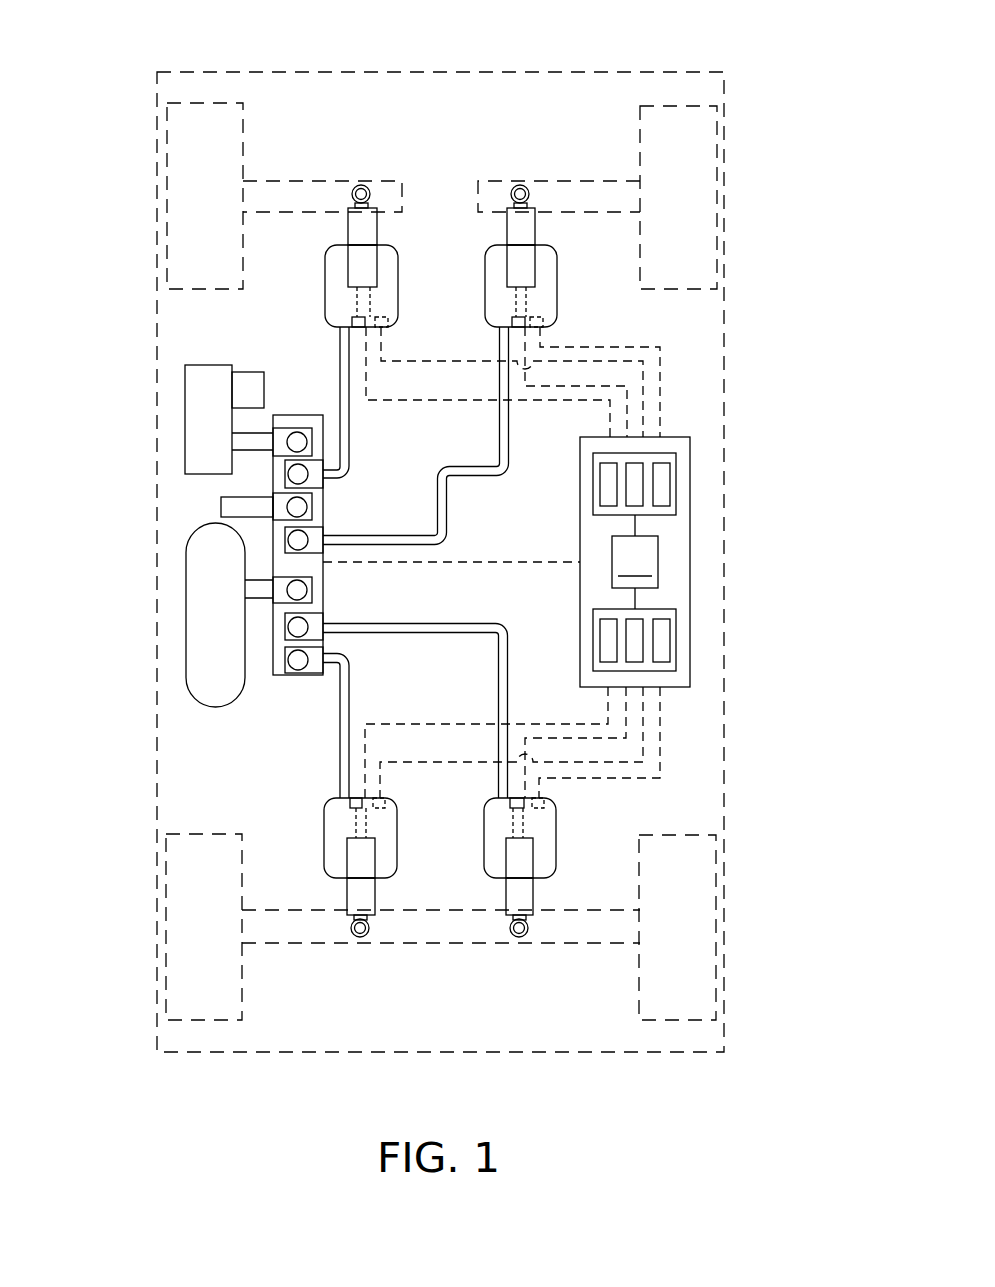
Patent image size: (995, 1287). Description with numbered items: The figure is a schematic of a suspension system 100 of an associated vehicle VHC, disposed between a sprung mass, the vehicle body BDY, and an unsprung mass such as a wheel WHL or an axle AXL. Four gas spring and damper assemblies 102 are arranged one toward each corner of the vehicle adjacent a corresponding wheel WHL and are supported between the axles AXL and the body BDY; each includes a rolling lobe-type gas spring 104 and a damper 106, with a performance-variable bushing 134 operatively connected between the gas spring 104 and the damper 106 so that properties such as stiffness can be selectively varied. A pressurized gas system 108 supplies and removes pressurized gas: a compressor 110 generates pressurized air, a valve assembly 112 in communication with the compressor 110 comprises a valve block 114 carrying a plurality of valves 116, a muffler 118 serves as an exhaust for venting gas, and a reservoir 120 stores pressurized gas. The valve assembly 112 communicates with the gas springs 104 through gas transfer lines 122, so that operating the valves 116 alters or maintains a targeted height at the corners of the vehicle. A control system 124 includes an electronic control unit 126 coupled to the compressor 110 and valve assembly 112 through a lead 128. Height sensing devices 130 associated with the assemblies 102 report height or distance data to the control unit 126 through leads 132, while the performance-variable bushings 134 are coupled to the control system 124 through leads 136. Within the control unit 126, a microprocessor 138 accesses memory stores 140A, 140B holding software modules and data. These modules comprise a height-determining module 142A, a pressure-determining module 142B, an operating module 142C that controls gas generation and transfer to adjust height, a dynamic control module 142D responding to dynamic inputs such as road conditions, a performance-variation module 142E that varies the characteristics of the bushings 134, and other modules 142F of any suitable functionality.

The suspension system 100 is at (440, 532).
The gas spring and damper assembly 102 is at (450, 557).
The gas spring 104 is at (325, 276).
The damper 106 is at (348, 228).
The pressurized gas system 108 is at (239, 539).
The compressor 110 is at (205, 392).
The valve assembly 112 is at (303, 410).
The valve block 114 is at (295, 677).
The valves 116 is at (300, 538).
The muffler 118 is at (220, 505).
The reservoir 120 is at (205, 590).
The gas transfer lines 122 is at (352, 415).
The control system 124 is at (653, 538).
The electronic control unit 126 is at (697, 452).
The lead 128 is at (507, 565).
The height sensing device 130 is at (387, 320).
The leads 132 is at (457, 361).
The performance-variable bushing 134 is at (350, 318).
The leads 136 is at (548, 402).
The microprocessor 138 is at (635, 562).
The memory 140A is at (653, 505).
The memory 140B is at (661, 631).
The height-determining module 142A is at (605, 485).
The pressure-determining module 142B is at (630, 500).
The operating module 142C is at (670, 485).
The dynamic control module 142D is at (605, 650).
The performance-variation module 142E is at (676, 640).
The other modules 142F is at (668, 652).
The vehicle body BDY is at (576, 70).
The vehicle VHC is at (745, 92).
The wheel WHL is at (187, 160).
The axle AXL is at (278, 188).